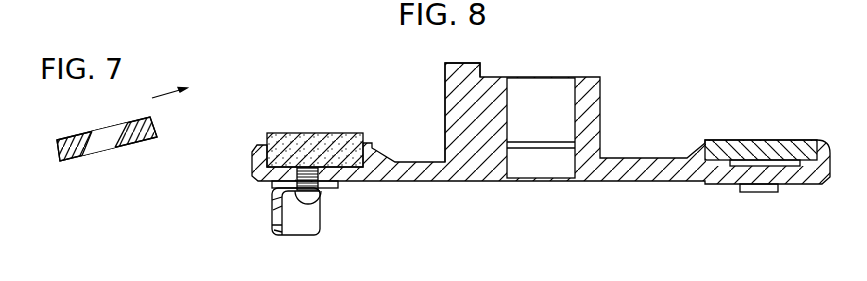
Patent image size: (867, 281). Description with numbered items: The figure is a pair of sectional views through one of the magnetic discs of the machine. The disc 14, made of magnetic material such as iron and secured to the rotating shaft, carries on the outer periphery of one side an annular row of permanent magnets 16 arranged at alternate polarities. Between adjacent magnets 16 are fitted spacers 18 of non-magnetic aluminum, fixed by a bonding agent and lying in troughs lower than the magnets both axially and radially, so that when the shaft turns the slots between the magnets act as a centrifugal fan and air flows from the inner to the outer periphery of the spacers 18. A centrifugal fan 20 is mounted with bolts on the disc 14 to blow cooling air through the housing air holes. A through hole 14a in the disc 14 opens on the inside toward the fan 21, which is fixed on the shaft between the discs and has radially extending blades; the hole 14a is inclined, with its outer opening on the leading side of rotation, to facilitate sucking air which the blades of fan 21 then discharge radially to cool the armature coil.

In FIG. 7, the disc 14 is at (140, 141).
In FIG. 8, the disc 14 is at (597, 157).
In FIG. 7, the through hole 14a is at (103, 129).
In FIG. 8, the permanent magnet 16 is at (342, 145).
In FIG. 8, the spacer 18 is at (757, 117).
In FIG. 8, the centrifugal fan 20 is at (312, 217).
In FIG. 8, the fan 21 is at (455, 70).